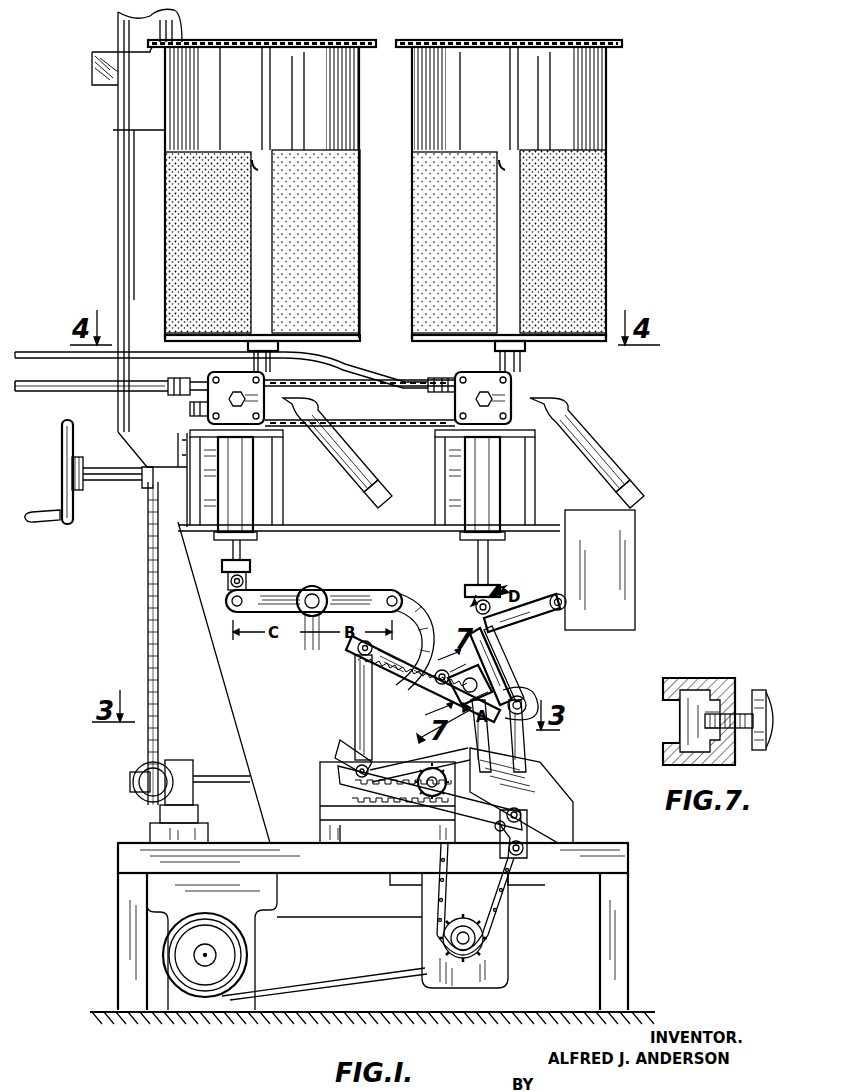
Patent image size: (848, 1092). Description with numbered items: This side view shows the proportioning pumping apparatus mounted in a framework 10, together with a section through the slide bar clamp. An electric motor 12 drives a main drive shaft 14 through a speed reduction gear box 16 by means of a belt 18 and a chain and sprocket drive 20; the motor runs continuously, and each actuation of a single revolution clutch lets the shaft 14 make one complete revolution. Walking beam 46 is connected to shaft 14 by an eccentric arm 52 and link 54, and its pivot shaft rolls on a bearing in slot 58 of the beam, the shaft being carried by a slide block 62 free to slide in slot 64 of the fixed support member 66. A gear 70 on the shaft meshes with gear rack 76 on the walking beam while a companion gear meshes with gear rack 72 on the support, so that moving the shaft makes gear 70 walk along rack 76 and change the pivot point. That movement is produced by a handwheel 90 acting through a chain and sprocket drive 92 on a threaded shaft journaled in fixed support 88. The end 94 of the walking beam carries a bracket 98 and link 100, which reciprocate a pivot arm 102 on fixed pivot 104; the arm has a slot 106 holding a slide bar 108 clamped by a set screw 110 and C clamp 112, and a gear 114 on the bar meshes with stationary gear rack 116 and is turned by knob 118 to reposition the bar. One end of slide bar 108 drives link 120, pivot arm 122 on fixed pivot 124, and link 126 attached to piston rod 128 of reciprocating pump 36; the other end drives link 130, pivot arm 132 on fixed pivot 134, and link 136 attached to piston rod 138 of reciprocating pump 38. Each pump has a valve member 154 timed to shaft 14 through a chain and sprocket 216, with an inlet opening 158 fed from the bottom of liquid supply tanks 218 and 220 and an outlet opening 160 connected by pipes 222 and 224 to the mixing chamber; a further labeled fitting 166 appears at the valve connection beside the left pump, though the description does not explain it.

In FIG. 1, the framework 10 is at (628, 985).
In FIG. 1, the electric motor 12 is at (245, 958).
In FIG. 1, the main drive shaft 14 is at (500, 838).
In FIG. 1, the speed reduction gear box 16 is at (490, 950).
In FIG. 1, the belt 18 is at (350, 985).
In FIG. 1, the chain and sprocket drive 20 is at (486, 905).
In FIG. 1, the reciprocating pump 36 is at (252, 535).
In FIG. 1, the reciprocating pump 38 is at (500, 535).
In FIG. 1, the walking beam 46 is at (405, 805).
In FIG. 1, the eccentric arm 52 is at (525, 848).
In FIG. 1, the link 54 is at (524, 816).
In FIG. 1, the slot 58 is at (385, 768).
In FIG. 1, the slide block 62 is at (428, 768).
In FIG. 1, the slot 64 is at (330, 790).
In FIG. 1, the fixed support member 66 is at (345, 812).
In FIG. 1, the gear 70 is at (438, 798).
In FIG. 1, the gear rack 72 is at (380, 810).
In FIG. 1, the gear rack 76 is at (340, 774).
In FIG. 1, the fixed support 88 is at (185, 760).
In FIG. 1, the handwheel 90 is at (60, 518).
In FIG. 1, the chain and sprocket drive 92 is at (158, 672).
In FIG. 1, the end of walking beam 94 is at (345, 740).
In FIG. 1, the bracket 98 is at (350, 770).
In FIG. 1, the link 100 is at (355, 688).
In FIG. 1, the pivot arm 102 is at (440, 676).
In FIG. 1, the fixed pivot 104 is at (443, 670).
In FIG. 1, the slot 106 is at (358, 655).
In FIG. 1, the slide bar 108 is at (455, 705).
In FIG. 7, the slide bar 108 is at (690, 720).
In FIG. 7, the set screw 110 is at (756, 752).
In FIG. 7, the C clamp 112 is at (730, 676).
In FIG. 1, the gear 114 is at (524, 698).
In FIG. 1, the stationary gear rack 116 is at (530, 700).
In FIG. 1, the knob 118 is at (514, 668).
In FIG. 1, the link 120 is at (416, 606).
In FIG. 1, the pivot arm 122 is at (350, 590).
In FIG. 1, the fixed pivot 124 is at (312, 586).
In FIG. 1, the link 126 is at (246, 585).
In FIG. 1, the piston rod 128 is at (250, 555).
In FIG. 1, the link 130 is at (508, 650).
In FIG. 1, the pivot arm 132 is at (528, 600).
In FIG. 1, the fixed pivot 134 is at (566, 602).
In FIG. 1, the link 136 is at (476, 612).
In FIG. 1, the piston rod 138 is at (478, 556).
In FIG. 1, the valve member 154 is at (312, 405).
In FIG. 1, the inlet opening 158 is at (272, 353).
In FIG. 1, the outlet opening 160 is at (205, 378).
In FIG. 1, the fitting 166 is at (192, 410).
In FIG. 1, the chain and sprocket 216 is at (523, 740).
In FIG. 1, the liquid supply tank 218 is at (255, 42).
In FIG. 1, the liquid supply tank 220 is at (502, 42).
In FIG. 1, the pipe 222 is at (58, 366).
In FIG. 1, the pipe 224 is at (50, 340).